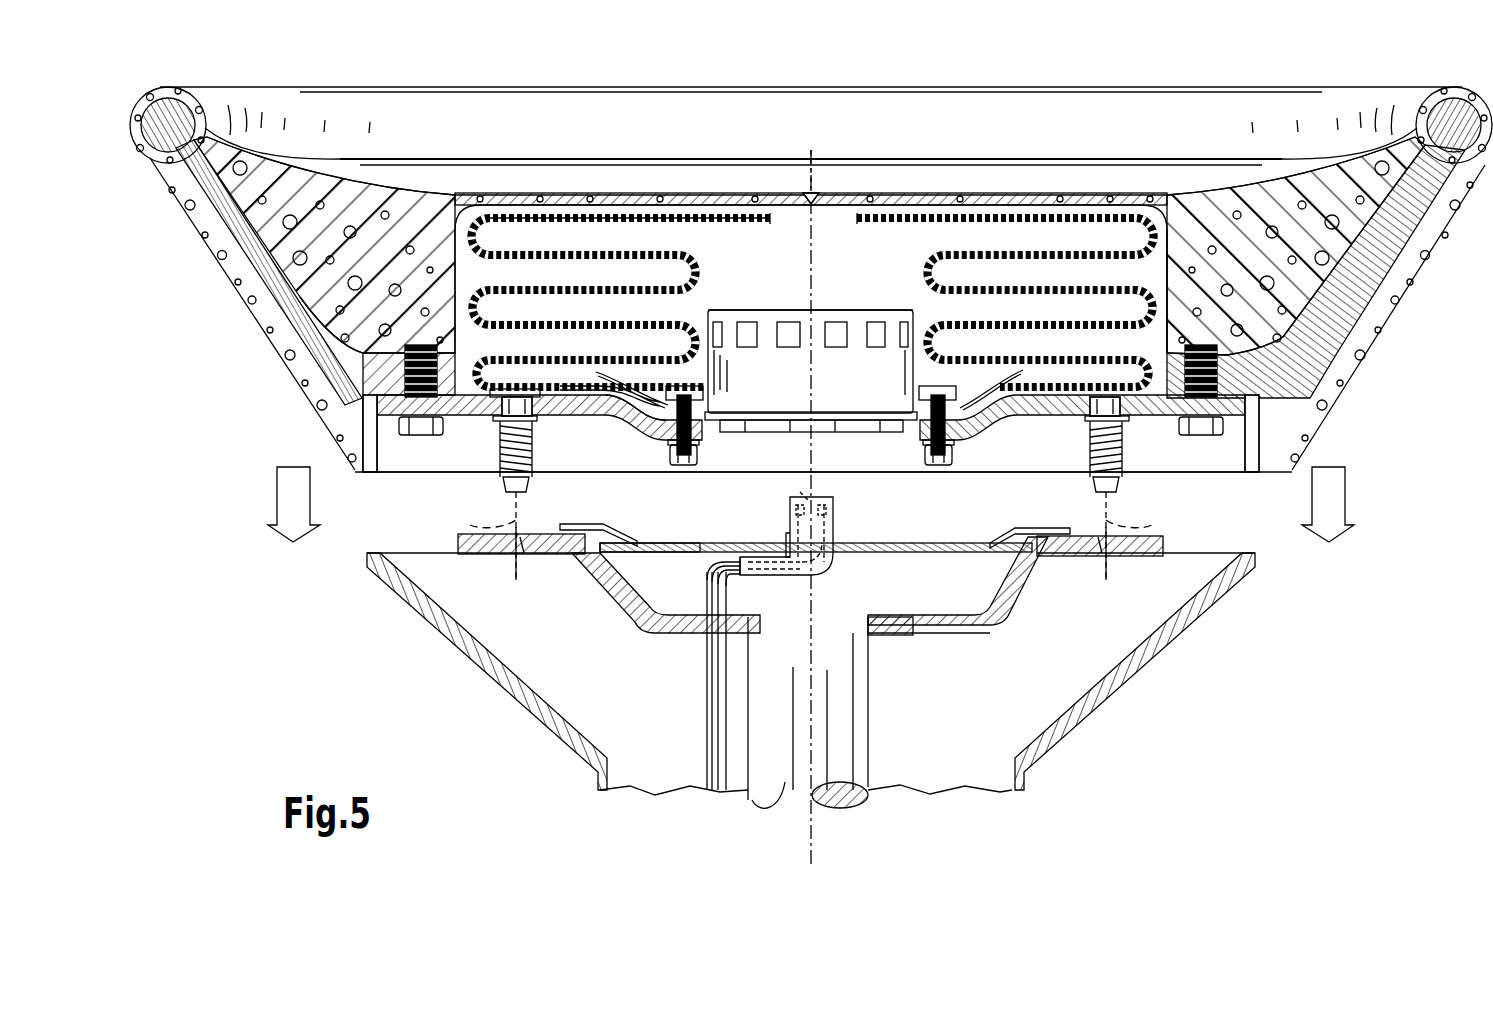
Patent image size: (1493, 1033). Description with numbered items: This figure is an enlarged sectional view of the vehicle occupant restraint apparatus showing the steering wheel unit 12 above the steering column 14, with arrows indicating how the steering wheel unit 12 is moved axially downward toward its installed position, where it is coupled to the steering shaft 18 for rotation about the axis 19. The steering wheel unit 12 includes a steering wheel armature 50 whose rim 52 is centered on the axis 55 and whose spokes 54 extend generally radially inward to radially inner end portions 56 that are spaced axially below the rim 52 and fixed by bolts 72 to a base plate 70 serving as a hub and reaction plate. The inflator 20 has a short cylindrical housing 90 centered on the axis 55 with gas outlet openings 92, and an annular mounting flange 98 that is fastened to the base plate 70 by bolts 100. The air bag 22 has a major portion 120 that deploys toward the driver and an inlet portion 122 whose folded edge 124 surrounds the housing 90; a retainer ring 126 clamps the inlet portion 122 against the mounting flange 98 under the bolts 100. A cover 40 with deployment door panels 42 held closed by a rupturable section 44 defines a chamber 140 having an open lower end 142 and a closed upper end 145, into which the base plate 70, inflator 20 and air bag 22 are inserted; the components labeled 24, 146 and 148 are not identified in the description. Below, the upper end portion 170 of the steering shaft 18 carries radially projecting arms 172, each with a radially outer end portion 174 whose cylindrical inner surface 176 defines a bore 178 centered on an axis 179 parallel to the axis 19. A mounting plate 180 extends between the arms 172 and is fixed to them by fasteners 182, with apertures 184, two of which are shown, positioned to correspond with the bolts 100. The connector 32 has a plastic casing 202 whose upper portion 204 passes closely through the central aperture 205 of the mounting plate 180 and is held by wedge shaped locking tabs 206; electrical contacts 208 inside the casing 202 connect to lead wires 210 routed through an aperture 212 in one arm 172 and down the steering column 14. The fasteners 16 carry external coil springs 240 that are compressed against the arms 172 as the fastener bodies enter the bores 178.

The vehicle steering wheel unit 12 is at (215, 445).
The vehicle steering column 14 is at (268, 582).
The fasteners 16 is at (548, 445).
The steering shaft 18 is at (765, 790).
The axis 19 is at (812, 832).
The inflator 20 is at (742, 306).
The air bag 22 is at (540, 210).
The mounting plate 24 is at (832, 432).
The connector 32 is at (840, 582).
The cover 40 is at (355, 190).
The deployment door panels 42 is at (703, 192).
The rupturable section 44 is at (808, 199).
The steering wheel armature 50 is at (222, 268).
The rim 52 is at (178, 122).
The spokes 54 is at (290, 303).
The axis 55 is at (815, 182).
The radially inner end portion 56 is at (456, 385).
The base plate 70 is at (640, 437).
The bolts 72 is at (398, 423).
The cylindrical housing 90 is at (762, 318).
The gas outlet openings 92 is at (871, 310).
The annular mounting flange 98 is at (790, 497).
The bolts 100 is at (684, 465).
The major portion 120 is at (562, 212).
The inlet portion 122 is at (615, 376).
The folded edge 124 is at (700, 410).
The retainer ring 126 is at (670, 395).
The chamber 140 is at (758, 258).
The open lower end 142 is at (438, 480).
The closed upper end 145 is at (578, 212).
The heating element run 146 is at (1010, 215).
The heating element housing side 148 is at (1082, 190).
The upper end portion 170 is at (600, 617).
The radially projecting arms 172 is at (630, 620).
The radially outer end portion 174 is at (485, 547).
The cylindrical inner surface 176 is at (510, 548).
The bores 178 is at (520, 557).
The axis 179 is at (823, 505).
The mounting plate 180 is at (625, 543).
The fasteners 182 is at (557, 525).
The apertures 184 is at (676, 558).
The plastic casing 202 is at (793, 578).
The upper portion 204 is at (828, 512).
The aperture 205 is at (770, 523).
The wedge shaped locking tabs 206 is at (835, 540).
The electrical contacts 208 is at (806, 492).
The lead wires 210 is at (712, 690).
The aperture 212 is at (693, 630).
The external coil spring 240 is at (500, 443).